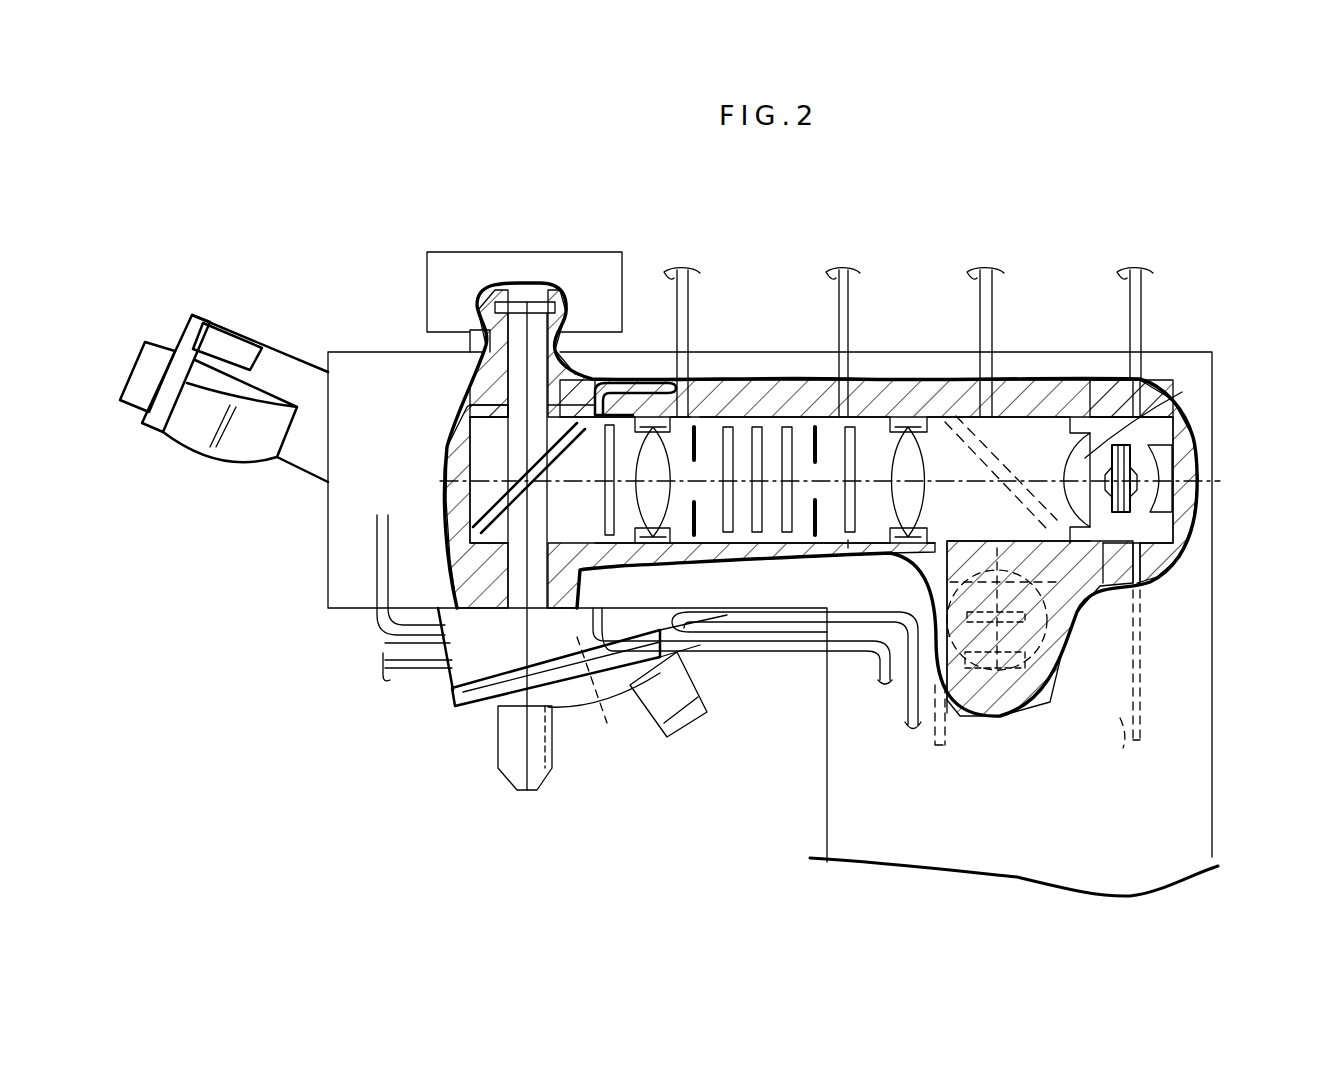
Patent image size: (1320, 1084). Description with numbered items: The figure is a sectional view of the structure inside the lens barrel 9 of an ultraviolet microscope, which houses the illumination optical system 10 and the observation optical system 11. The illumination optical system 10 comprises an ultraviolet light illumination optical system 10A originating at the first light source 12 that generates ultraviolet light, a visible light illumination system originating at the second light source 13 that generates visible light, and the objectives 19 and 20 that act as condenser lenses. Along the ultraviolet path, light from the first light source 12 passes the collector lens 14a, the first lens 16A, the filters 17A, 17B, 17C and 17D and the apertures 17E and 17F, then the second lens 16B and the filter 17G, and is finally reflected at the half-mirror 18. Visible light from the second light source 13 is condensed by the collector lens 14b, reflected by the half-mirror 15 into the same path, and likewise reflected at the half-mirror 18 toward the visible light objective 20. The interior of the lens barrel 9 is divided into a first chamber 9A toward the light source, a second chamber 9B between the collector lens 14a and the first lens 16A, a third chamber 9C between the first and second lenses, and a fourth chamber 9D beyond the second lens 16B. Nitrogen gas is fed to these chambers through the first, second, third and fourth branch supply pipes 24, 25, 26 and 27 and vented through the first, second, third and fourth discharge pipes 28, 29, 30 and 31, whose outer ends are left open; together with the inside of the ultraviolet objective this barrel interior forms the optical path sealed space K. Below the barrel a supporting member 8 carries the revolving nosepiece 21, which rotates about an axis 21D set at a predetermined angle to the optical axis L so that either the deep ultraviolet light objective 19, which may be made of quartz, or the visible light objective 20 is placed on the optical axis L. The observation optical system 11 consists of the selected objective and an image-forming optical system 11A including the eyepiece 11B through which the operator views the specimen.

The supporting member 8 is at (387, 652).
The lens barrel 9 is at (830, 505).
The first chamber 9A is at (1192, 428).
The second chamber 9B is at (1023, 400).
The third chamber 9C is at (873, 400).
The fourth chamber 9D is at (497, 527).
The illumination optical system 10 is at (1048, 464).
The ultraviolet light illumination optical system 10A is at (915, 383).
The observation optical system 11 is at (522, 386).
The image-forming optical system 11A is at (475, 468).
The eyepiece 11B is at (188, 427).
The first light source 12 is at (1130, 505).
The second light source 13 is at (1045, 665).
The collector lens 14a is at (1125, 410).
The collector lens 14b is at (1073, 607).
The half-mirror 15 is at (976, 418).
The first lens 16A is at (900, 420).
The second lens 16B is at (643, 415).
The filter 17A is at (858, 520).
The filter 17B is at (790, 537).
The filter 17C is at (730, 425).
The filter 17D is at (708, 540).
The aperture 17E is at (790, 425).
The aperture 17F is at (668, 538).
The filter 17G is at (603, 435).
The half-mirror 18 is at (492, 470).
The deep ultraviolet light objective 19 is at (510, 757).
The visible light objective 20 is at (690, 712).
The revolving nosepiece 21 is at (573, 697).
The axis 21D is at (605, 712).
The first branch supply pipe 24 is at (1143, 302).
The second branch supply pipe 25 is at (990, 300).
The third branch supply pipe 26 is at (850, 293).
The fourth branch supply pipe 27 is at (690, 283).
The first discharge pipe 28 is at (1133, 710).
The second discharge pipe 29 is at (945, 722).
The third discharge pipe 30 is at (913, 727).
The fourth discharge pipe 31 is at (873, 660).
The optical path sealed space K is at (990, 497).
The optical axis L is at (525, 727).